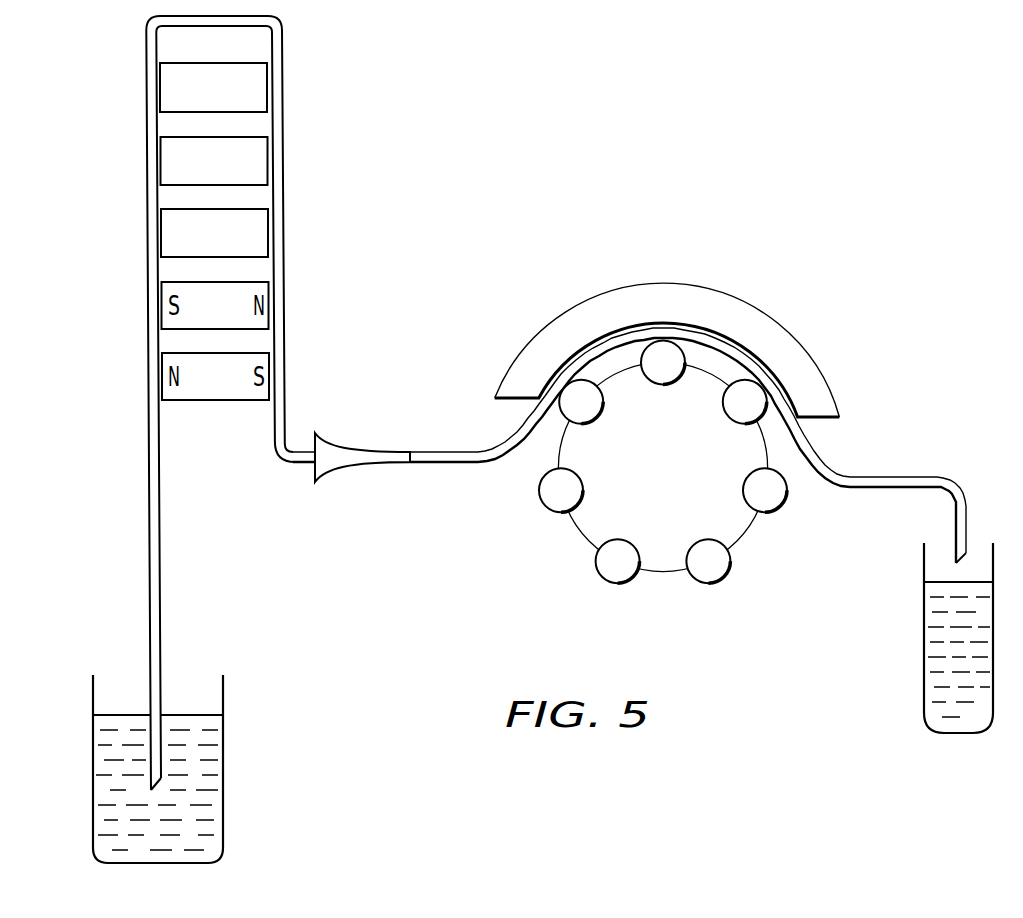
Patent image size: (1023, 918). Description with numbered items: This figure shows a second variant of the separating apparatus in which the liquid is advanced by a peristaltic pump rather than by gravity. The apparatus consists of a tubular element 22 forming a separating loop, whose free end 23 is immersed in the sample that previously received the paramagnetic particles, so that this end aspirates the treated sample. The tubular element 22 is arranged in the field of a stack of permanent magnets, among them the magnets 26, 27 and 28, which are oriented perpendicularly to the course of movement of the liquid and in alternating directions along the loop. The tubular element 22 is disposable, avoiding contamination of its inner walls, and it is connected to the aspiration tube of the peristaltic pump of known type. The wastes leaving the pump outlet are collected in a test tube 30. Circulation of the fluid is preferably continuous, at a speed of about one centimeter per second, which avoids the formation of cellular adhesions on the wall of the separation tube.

The tubular element 22 is at (148, 418).
The free end 23 is at (150, 757).
The permanent magnet 26 is at (164, 213).
The permanent magnet 27 is at (162, 142).
The permanent magnet 28 is at (162, 68).
The test tube 30 is at (937, 626).